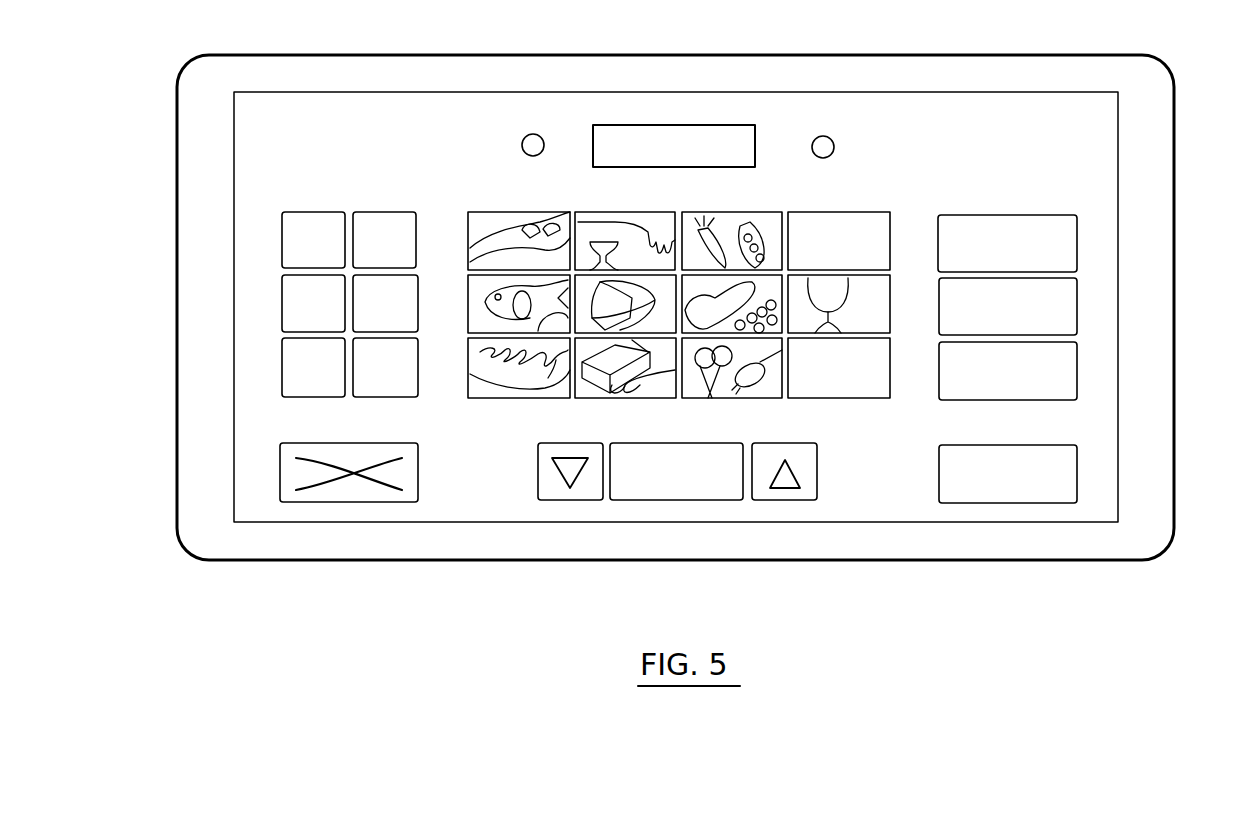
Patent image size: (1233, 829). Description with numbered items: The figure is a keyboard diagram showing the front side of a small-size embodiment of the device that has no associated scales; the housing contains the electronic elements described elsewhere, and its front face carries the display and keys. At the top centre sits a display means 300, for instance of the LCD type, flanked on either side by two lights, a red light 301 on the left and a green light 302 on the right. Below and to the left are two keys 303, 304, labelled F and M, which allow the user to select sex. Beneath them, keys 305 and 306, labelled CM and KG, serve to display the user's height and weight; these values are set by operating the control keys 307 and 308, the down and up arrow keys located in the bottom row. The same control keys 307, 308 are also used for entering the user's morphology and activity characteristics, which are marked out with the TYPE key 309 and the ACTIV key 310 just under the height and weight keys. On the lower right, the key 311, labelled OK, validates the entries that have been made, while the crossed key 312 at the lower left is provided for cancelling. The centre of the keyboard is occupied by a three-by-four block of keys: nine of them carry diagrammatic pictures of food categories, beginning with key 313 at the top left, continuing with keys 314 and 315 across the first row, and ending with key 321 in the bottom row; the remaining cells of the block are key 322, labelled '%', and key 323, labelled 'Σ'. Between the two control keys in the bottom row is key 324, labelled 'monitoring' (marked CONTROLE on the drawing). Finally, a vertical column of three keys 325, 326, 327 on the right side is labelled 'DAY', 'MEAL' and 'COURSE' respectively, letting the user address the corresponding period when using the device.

The display means 300 is at (712, 128).
The red light 301 is at (535, 145).
The green light 302 is at (826, 142).
The sex selection key 303 is at (298, 218).
The sex selection key 304 is at (368, 218).
The height key 305 is at (293, 320).
The weight key 306 is at (405, 320).
The control key 307 is at (555, 497).
The control key 308 is at (780, 495).
The morphology key 309 is at (287, 385).
The activity key 310 is at (398, 390).
The OK key 311 is at (1065, 470).
The cancel key 312 is at (349, 493).
The food category key 313 is at (486, 218).
The food category key 314 is at (648, 222).
The food category key 315 is at (762, 222).
The food category key 321 is at (760, 393).
The percent key 322 is at (875, 222).
The sum key 323 is at (852, 393).
The monitoring key 324 is at (668, 495).
The DAY key 325 is at (1067, 230).
The MEAL key 326 is at (1067, 293).
The COURSE key 327 is at (1067, 357).